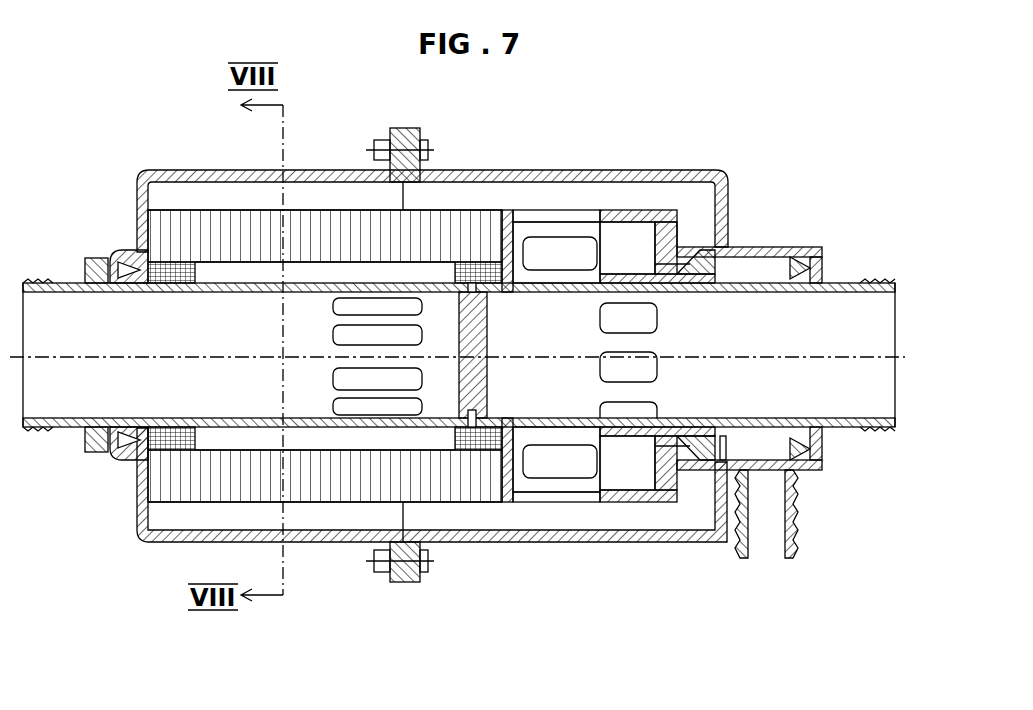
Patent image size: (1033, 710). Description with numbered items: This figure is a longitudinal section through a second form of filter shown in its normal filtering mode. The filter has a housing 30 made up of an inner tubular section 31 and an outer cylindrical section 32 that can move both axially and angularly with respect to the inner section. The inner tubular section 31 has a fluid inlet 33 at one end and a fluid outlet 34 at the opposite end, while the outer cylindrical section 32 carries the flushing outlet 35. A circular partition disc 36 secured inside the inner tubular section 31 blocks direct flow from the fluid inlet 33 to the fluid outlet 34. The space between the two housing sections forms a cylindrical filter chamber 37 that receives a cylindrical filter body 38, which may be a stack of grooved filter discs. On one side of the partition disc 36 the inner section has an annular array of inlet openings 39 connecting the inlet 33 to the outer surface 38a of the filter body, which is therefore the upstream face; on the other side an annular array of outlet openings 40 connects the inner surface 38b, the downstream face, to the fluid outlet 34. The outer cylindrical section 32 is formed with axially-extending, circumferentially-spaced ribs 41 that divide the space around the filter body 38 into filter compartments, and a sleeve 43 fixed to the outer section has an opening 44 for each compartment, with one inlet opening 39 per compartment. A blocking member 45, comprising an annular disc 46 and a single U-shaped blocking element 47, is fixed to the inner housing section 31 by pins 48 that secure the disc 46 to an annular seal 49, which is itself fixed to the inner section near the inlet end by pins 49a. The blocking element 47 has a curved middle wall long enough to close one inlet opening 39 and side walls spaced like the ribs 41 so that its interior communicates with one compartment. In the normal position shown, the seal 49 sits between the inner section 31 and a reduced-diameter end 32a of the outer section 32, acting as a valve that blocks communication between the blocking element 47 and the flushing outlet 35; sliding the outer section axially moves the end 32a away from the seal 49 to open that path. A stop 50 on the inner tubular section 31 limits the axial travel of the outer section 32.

The housing 30 is at (168, 170).
The inner tubular section 31 is at (50, 281).
The outer cylindrical section 32 is at (727, 176).
The reduced-diameter end 32a is at (812, 246).
The fluid inlet 33 is at (845, 415).
The fluid outlet 34 is at (52, 405).
The flushing outlet 35 is at (773, 540).
The partition disc 36 is at (488, 372).
The filter chamber 37 is at (235, 272).
The filter body 38 is at (210, 218).
The outer surface 38a is at (330, 212).
The inner surface 38b is at (310, 263).
The inlet openings 39 is at (657, 360).
The outlet openings 40 is at (345, 385).
The ribs 41 is at (475, 192).
The sleeve 43 is at (518, 212).
The opening 44 is at (572, 245).
The blocking member 45 is at (665, 232).
The annular disc 46 is at (680, 238).
The blocking element 47 is at (626, 274).
The pins 48 is at (700, 258).
The annular seal 49 is at (687, 434).
The pins 49a is at (723, 434).
The stop 50 is at (104, 453).